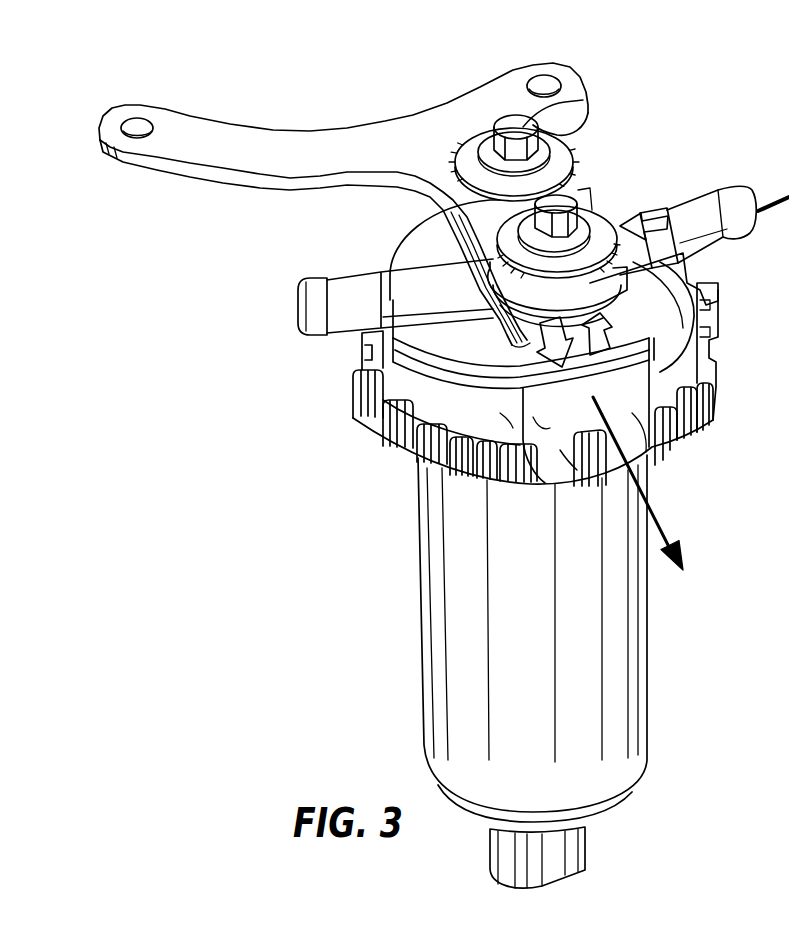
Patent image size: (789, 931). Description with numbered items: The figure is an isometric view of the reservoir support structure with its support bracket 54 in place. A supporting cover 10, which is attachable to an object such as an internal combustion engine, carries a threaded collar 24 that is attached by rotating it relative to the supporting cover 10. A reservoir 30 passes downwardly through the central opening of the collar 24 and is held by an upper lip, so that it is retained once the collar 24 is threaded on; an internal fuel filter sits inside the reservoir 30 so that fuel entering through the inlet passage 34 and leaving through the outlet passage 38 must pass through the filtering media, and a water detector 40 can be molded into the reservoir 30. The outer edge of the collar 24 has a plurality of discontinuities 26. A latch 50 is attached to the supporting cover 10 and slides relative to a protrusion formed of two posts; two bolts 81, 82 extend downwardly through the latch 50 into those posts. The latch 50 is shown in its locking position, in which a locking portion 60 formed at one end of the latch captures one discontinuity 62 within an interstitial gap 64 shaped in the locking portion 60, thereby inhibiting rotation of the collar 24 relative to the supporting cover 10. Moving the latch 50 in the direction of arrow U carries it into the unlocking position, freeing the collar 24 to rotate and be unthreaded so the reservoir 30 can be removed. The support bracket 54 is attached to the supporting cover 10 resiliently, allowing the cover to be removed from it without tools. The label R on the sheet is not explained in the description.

The supporting cover 10 is at (412, 250).
The collar 24 is at (700, 350).
The discontinuities 26 is at (698, 440).
The reservoir 30 is at (633, 628).
The inlet passage 34 is at (695, 204).
The outlet passage 38 is at (347, 317).
The water detector 40 is at (587, 848).
The latch 50 is at (626, 337).
The support bracket 54 is at (276, 141).
The locking portion 60 is at (530, 407).
The discontinuity 62 is at (597, 477).
The interstitial gap 64 is at (577, 452).
The bolt 81 is at (548, 107).
The bolt 82 is at (563, 203).
The arrow U is at (667, 528).
The flow direction R is at (788, 186).